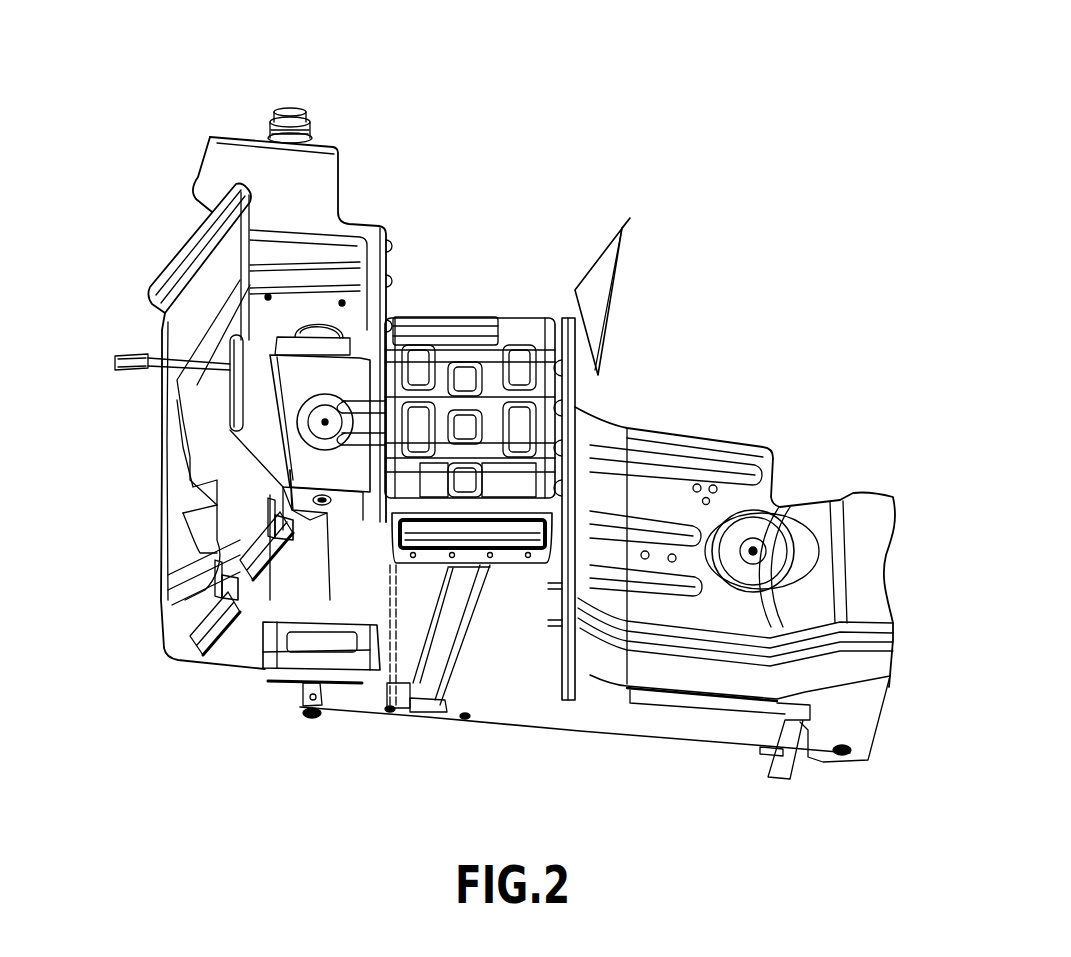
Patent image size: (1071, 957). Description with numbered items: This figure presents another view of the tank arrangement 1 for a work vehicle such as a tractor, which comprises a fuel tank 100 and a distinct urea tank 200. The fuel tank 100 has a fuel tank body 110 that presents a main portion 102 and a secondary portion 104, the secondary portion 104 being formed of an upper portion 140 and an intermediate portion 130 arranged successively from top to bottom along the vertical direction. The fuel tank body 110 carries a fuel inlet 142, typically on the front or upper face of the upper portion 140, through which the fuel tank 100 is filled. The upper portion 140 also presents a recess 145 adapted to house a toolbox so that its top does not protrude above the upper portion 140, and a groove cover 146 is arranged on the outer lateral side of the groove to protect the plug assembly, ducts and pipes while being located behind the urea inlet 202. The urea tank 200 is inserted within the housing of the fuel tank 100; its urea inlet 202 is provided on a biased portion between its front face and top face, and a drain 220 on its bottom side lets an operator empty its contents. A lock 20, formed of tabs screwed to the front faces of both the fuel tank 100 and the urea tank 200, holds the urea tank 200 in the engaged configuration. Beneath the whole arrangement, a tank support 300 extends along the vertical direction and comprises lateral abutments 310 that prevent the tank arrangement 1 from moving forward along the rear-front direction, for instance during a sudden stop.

The tank arrangement 1 is at (860, 266).
The lock 20 is at (245, 300).
The fuel tank 100 is at (763, 440).
The main portion 102 is at (833, 322).
The secondary portion 104 is at (386, 150).
The fuel tank body 110 is at (480, 322).
The intermediate portion 130 is at (145, 660).
The upper portion 140 is at (145, 442).
The fuel inlet 142 is at (278, 112).
The recess 145 is at (183, 213).
The groove cover 146 is at (263, 327).
The urea tank 200 is at (238, 463).
The urea inlet 202 is at (378, 290).
The drain 220 is at (290, 495).
The tank support 300 is at (505, 685).
The lateral abutments 310 is at (272, 560).